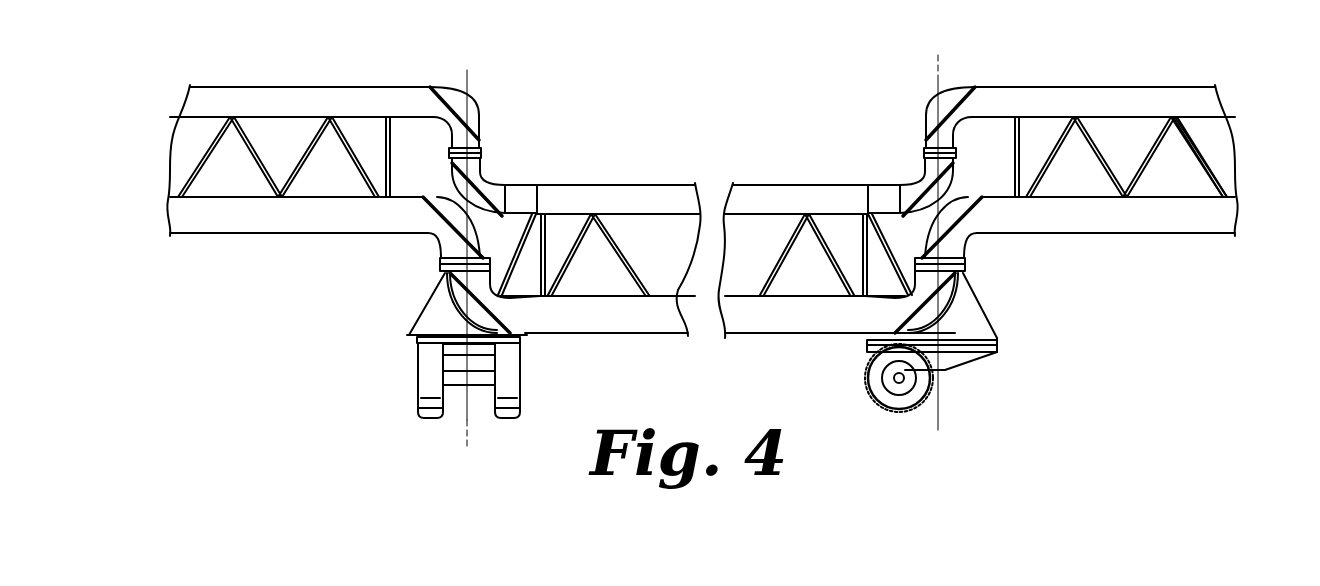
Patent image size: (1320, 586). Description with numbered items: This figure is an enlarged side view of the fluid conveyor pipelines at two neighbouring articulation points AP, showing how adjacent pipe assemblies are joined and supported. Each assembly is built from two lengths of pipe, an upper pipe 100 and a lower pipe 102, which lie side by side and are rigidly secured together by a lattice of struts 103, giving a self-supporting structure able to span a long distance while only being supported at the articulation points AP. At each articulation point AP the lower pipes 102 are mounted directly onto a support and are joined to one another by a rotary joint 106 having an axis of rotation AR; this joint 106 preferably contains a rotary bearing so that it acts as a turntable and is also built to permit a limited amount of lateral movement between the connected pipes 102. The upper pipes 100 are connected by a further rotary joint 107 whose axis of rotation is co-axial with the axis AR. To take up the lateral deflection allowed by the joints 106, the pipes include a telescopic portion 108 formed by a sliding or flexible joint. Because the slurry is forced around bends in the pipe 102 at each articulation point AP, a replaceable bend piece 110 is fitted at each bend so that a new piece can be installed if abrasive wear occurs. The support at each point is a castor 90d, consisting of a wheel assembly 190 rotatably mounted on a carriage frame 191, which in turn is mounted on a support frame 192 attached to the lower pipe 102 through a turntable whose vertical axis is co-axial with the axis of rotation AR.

The upper pipe 100 is at (654, 200).
The lower pipe 102 is at (662, 318).
The lattice of struts 103 is at (1203, 157).
The rotary joint 106 is at (441, 264).
The rotary joint 107 is at (482, 151).
The telescopic portion 108 is at (518, 195).
The replaceable bend piece 110 is at (471, 108).
The wheel assembly 190 is at (428, 398).
The carriage frame 191 is at (475, 368).
The support frame 192 is at (415, 337).
The castor 90d is at (530, 366).
The axis of rotation AR is at (452, 95).
The articulation point AP is at (490, 116).